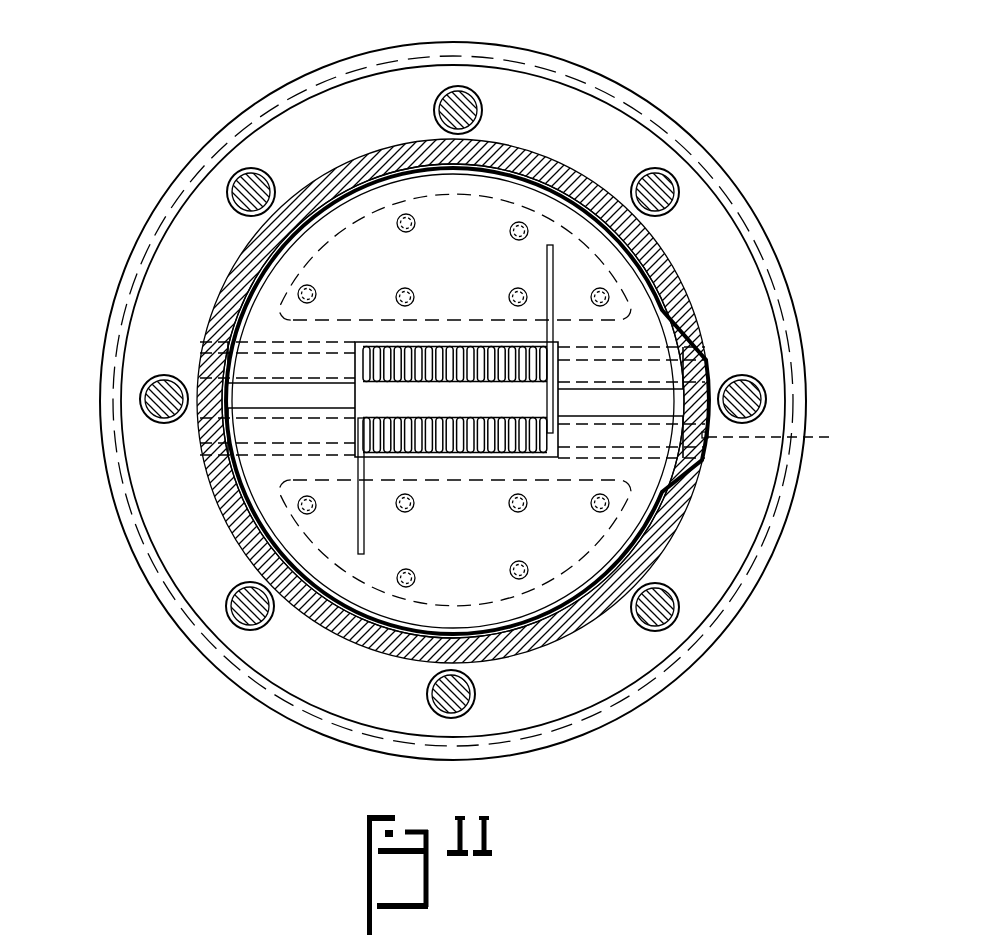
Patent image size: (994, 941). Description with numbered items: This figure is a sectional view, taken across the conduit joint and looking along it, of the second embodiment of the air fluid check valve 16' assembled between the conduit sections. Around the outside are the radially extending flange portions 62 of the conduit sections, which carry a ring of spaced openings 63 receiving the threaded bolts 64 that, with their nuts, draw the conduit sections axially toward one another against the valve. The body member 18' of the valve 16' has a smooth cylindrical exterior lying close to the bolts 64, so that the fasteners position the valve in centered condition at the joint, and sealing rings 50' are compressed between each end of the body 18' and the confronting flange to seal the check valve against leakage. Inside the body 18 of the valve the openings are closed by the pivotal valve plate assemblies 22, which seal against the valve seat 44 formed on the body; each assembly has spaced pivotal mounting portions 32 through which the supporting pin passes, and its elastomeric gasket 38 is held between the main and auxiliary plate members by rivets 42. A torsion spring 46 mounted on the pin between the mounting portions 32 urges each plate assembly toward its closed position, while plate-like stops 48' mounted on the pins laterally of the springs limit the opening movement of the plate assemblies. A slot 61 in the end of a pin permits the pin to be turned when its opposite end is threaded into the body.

The check valve 16' is at (509, 346).
The body member 18' is at (464, 357).
The valve plate assembly 22 is at (655, 318).
The pivotal mounting portions 32 is at (258, 362).
The gasket member 38 is at (372, 192).
The rivets 42 is at (525, 572).
The valve seat 44 is at (563, 612).
The torsion spring 46 is at (453, 342).
The stops 48' is at (456, 399).
The sealing rings 50' is at (453, 386).
The slot 61 is at (783, 431).
The flange portions 62 is at (690, 132).
The openings 63 is at (752, 395).
The threaded bolts 64 is at (466, 98).
The valve body 18 is at (455, 399).